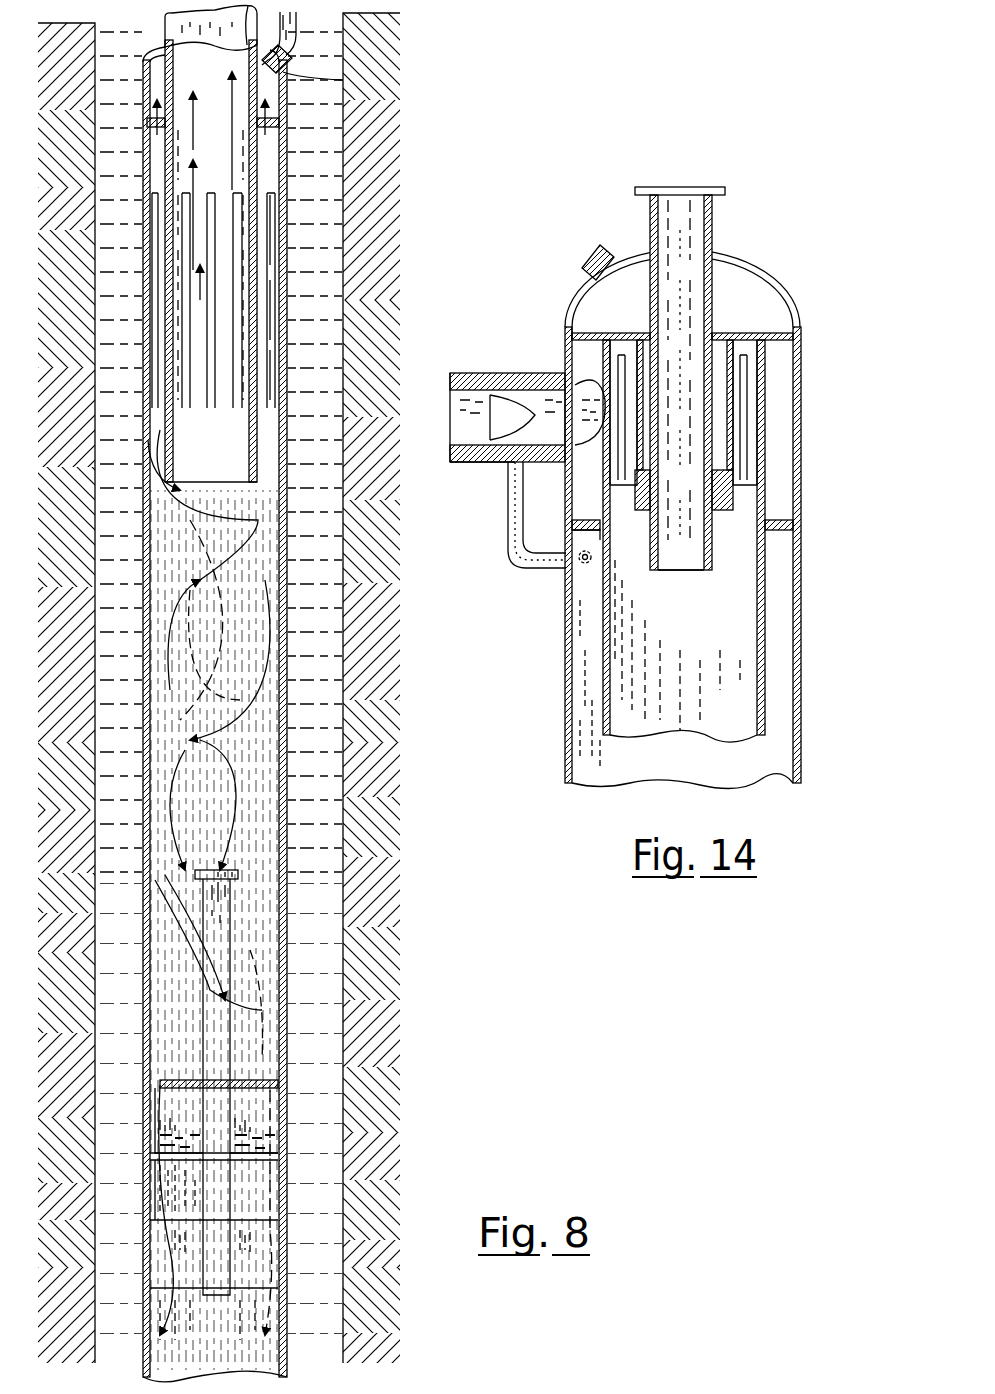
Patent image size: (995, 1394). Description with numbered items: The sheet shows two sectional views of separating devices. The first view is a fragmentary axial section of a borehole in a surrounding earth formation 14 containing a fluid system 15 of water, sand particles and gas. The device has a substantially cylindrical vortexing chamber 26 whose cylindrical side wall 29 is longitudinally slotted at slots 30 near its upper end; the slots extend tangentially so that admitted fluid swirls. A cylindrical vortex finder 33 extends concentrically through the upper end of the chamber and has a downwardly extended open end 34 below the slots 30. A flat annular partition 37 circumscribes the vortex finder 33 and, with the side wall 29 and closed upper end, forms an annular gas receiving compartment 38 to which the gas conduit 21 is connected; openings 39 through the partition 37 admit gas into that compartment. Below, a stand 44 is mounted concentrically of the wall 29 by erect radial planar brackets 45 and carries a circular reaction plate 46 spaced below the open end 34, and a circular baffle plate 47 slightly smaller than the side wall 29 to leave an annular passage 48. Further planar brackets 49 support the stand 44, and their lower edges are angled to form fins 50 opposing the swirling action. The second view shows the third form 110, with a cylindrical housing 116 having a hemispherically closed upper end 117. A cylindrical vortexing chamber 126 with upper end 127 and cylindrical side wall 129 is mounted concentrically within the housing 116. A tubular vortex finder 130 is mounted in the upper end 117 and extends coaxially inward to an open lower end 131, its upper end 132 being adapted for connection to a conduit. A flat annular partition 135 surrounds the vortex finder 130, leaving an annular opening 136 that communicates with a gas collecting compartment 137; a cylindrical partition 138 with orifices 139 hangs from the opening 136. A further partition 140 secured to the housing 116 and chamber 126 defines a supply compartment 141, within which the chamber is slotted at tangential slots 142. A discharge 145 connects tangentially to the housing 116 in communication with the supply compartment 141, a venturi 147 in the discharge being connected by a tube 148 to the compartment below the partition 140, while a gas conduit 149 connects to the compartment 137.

In FIG. 8, the earth formation 14 is at (68, 235).
In FIG. 8, the fluid system 15 is at (134, 618).
In FIG. 8, the gas conduit 21 is at (292, 26).
In FIG. 8, the vortexing chamber 26 is at (224, 618).
In FIG. 8, the side wall 29 is at (140, 700).
In FIG. 8, the slots 30 is at (270, 280).
In FIG. 8, the vortex finder 33 is at (172, 20).
In FIG. 8, the open end 34 is at (222, 480).
In FIG. 8, the annular partition 37 is at (145, 125).
In FIG. 8, the gas receiving compartment 38 is at (272, 75).
In FIG. 8, the openings 39 is at (172, 118).
In FIG. 8, the stand 44 is at (228, 915).
In FIG. 8, the brackets 45 is at (198, 1273).
In FIG. 8, the reaction plate 46 is at (212, 870).
In FIG. 8, the baffle plate 47 is at (205, 1075).
In FIG. 8, the annular passage 48 is at (270, 1080).
In FIG. 8, the brackets 49 is at (196, 1115).
In FIG. 8, the fins 50 is at (270, 1150).
In FIG. 14, the third form of the invention 110 is at (808, 470).
In FIG. 14, the housing 116 is at (802, 408).
In FIG. 14, the upper end of the housing 117 is at (785, 292).
In FIG. 14, the vortexing chamber 126 is at (600, 656).
In FIG. 14, the upper end of the vortexing chamber 127 is at (605, 340).
In FIG. 14, the side wall 129 is at (765, 672).
In FIG. 14, the vortex finder 130 is at (712, 262).
In FIG. 14, the open lower end 131 is at (685, 572).
In FIG. 14, the upper end of the vortex finder 132 is at (712, 185).
In FIG. 14, the annular partition 135 is at (780, 332).
In FIG. 14, the annular opening 136 is at (648, 335).
In FIG. 14, the gas collecting compartment 137 is at (762, 311).
In FIG. 14, the cylindrical partition 138 is at (733, 512).
In FIG. 14, the orifices 139 is at (735, 415).
In FIG. 14, the partition 140 is at (582, 520).
In FIG. 14, the supply compartment 141 is at (582, 488).
In FIG. 14, the slots 142 is at (622, 365).
In FIG. 14, the discharge 145 is at (466, 466).
In FIG. 14, the venturi 147 is at (510, 415).
In FIG. 14, the tube 148 is at (540, 565).
In FIG. 14, the gas conduit 149 is at (590, 252).